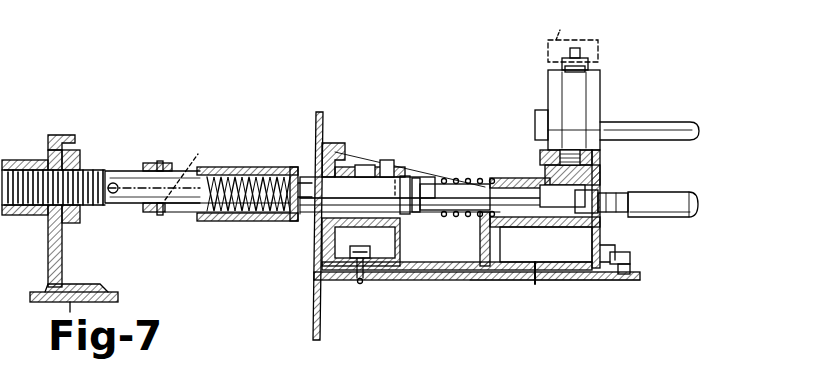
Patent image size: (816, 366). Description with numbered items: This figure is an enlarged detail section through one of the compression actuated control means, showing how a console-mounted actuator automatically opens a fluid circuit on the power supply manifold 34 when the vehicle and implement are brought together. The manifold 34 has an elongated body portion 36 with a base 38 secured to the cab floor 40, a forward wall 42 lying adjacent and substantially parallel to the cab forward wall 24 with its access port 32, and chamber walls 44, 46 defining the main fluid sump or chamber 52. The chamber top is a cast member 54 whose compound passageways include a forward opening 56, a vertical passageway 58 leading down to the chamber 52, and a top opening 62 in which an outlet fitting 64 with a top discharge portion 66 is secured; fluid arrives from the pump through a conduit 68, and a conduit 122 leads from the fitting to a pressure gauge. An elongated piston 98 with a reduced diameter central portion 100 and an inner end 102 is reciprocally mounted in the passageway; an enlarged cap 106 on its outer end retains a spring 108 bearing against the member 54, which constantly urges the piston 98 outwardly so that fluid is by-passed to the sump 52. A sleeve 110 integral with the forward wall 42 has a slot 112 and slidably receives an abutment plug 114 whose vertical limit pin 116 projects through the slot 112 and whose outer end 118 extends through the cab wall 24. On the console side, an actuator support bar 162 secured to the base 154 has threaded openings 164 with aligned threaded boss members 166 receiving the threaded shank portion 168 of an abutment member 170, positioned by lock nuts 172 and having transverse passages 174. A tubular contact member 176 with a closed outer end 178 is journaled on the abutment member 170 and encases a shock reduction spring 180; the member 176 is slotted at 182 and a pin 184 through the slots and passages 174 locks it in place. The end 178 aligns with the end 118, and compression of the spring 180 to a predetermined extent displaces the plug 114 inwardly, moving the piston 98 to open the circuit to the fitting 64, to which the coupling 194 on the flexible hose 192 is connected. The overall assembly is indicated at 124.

The forward wall 24 is at (338, 131).
The access port 32 is at (320, 118).
The power supply manifold 34 is at (616, 240).
The elongated body portion 36 is at (602, 250).
The base 38 is at (436, 280).
The cab floor 40 is at (600, 283).
The forward wall 42 is at (338, 232).
The chamber wall 44 is at (500, 271).
The chamber wall 46 is at (562, 281).
The main fluid sump or chamber 52 is at (535, 284).
The top member 54 is at (506, 176).
The forward opening 56 is at (495, 226).
The vertical passageway 58 is at (518, 229).
The top opening 62 is at (600, 186).
The outlet fitting 64 is at (600, 102).
The top discharge portion 66 is at (590, 54).
The conduit 68 is at (670, 228).
The elongated piston 98 is at (470, 182).
The reduced diameter central portion 100 is at (548, 227).
The inner end 102 is at (628, 195).
The enlarged cap 106 is at (430, 214).
The spring 108 is at (452, 182).
The sleeve 110 is at (384, 280).
The slot 112 is at (368, 165).
The abutment plug or index element 114 is at (290, 222).
The vertical limit pin 116 is at (387, 160).
The outer end 118 is at (280, 228).
The conduit 122 is at (660, 124).
The adjusting assembly 124 is at (34, 142).
The base 154 is at (100, 303).
The actuator support bar 162 is at (62, 264).
The threaded opening 164 is at (80, 155).
The threaded boss member 166 is at (20, 215).
The threaded shank portion 168 is at (94, 218).
The abutment member or index point 170 is at (150, 170).
The lock nut 172 is at (70, 214).
The transverse passage 174 is at (197, 166).
The tubular contact member 176 is at (234, 222).
The closed outer end 178 is at (292, 168).
The shock reduction spring 180 is at (245, 166).
The longitudinal slot 182 is at (206, 222).
The pin 184 is at (160, 216).
The flexible hose 192 is at (592, 36).
The coupling 194 is at (610, 75).